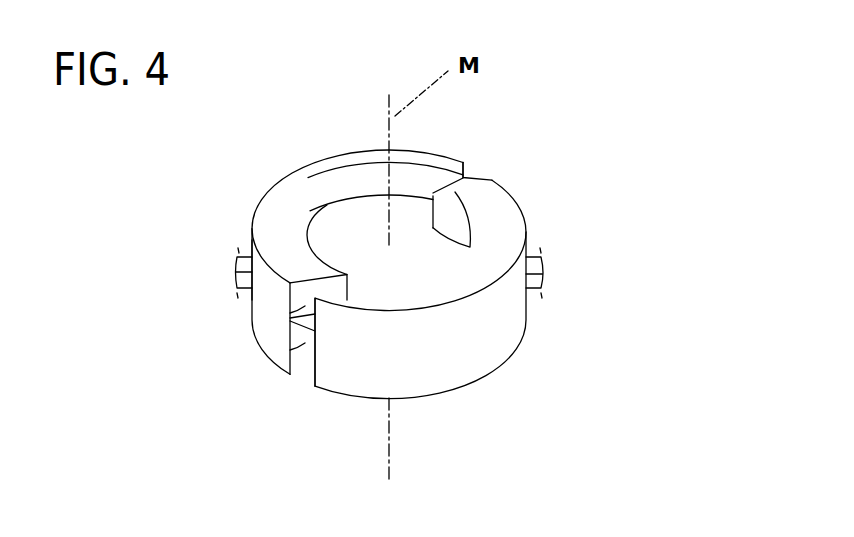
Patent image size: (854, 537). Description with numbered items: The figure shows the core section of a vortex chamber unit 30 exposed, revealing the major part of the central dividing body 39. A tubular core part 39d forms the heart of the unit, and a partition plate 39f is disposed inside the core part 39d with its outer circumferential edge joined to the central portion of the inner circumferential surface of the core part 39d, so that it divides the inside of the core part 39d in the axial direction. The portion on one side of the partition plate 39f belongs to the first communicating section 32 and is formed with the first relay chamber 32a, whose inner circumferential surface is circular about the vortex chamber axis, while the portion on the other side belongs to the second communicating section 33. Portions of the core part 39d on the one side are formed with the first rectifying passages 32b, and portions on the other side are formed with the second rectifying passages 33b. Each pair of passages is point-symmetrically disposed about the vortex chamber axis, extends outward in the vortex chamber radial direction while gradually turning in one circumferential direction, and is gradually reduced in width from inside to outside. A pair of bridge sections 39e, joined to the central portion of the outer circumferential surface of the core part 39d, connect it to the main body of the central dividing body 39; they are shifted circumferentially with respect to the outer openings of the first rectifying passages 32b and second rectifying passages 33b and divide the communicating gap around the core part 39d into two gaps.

The vortex chamber unit 30 is at (431, 291).
The first communicating section 32 is at (476, 170).
The first relay chamber 32a is at (323, 250).
The first rectifying passages 32b is at (290, 318).
The second communicating section 33 is at (305, 390).
The second rectifying passages 33b is at (288, 369).
The central dividing body 39 is at (644, 133).
The core part 39d is at (283, 235).
The bridge sections 39e is at (233, 259).
The partition plate 39f is at (364, 240).